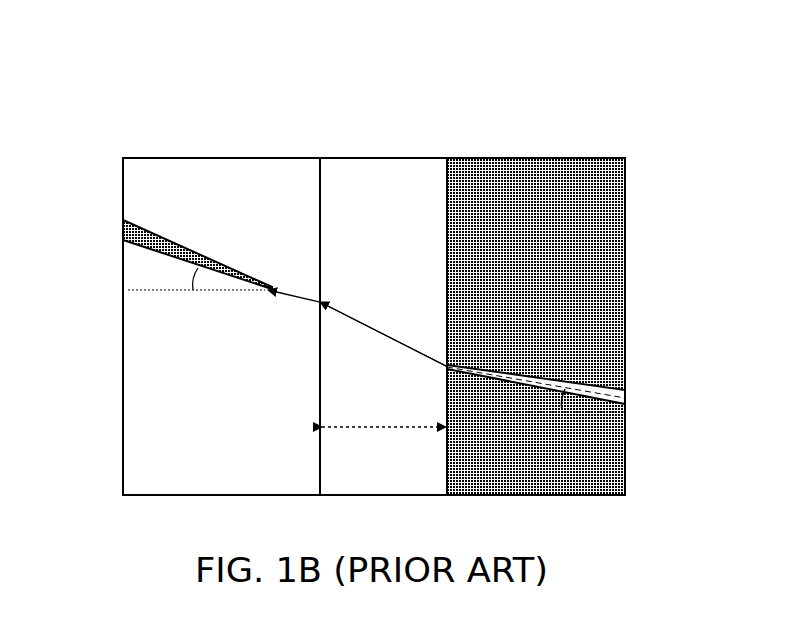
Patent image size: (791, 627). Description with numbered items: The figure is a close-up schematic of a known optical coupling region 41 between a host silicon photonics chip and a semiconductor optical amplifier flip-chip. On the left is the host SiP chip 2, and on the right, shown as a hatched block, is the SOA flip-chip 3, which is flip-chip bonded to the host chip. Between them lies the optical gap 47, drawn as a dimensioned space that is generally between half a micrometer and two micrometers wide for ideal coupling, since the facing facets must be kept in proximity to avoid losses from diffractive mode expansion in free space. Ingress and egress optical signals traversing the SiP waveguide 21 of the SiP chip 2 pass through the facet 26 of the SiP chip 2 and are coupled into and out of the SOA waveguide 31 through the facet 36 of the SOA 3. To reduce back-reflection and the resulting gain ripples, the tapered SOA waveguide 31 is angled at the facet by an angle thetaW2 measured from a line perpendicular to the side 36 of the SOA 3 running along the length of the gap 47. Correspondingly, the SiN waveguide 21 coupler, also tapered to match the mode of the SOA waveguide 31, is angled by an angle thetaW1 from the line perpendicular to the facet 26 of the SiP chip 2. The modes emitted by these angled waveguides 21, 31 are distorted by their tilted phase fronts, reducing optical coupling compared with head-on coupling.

The optical coupling 41 is at (118, 75).
The host SiP chip 2 is at (247, 158).
The SOA flip-chip 3 is at (525, 158).
The SiP waveguide 21 is at (130, 220).
The facet of the SiP chip 26 is at (320, 318).
The facet of the SOA 36 is at (447, 352).
The SOA waveguide 31 is at (607, 385).
The optical gap 47 is at (384, 443).
The angle of the SiP waveguide thetaW1 is at (197, 271).
The angle of the SOA waveguide thetaW2 is at (563, 410).